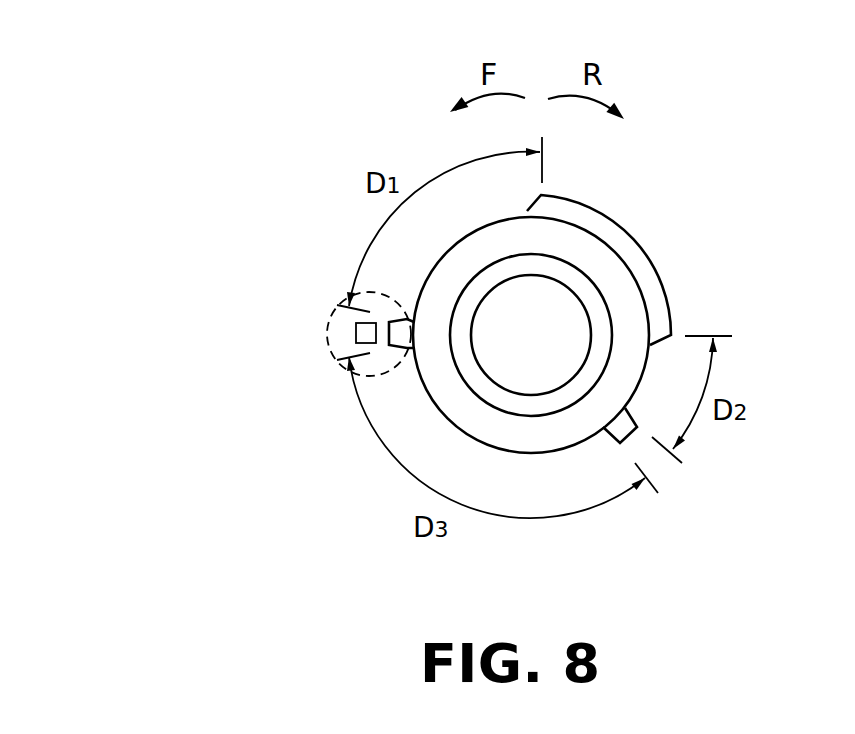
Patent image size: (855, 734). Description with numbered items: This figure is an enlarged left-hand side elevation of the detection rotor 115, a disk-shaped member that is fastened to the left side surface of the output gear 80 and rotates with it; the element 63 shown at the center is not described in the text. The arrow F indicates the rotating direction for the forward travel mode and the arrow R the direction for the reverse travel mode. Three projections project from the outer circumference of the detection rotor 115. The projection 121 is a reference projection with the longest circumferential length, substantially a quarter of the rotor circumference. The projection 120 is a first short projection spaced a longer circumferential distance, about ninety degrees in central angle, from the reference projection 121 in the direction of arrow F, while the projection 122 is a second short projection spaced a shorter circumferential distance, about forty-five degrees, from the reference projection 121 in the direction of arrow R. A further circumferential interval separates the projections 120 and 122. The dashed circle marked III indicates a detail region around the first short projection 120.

The reference projection 121 is at (582, 208).
The output gear 80 is at (568, 277).
The shaft 63 is at (568, 315).
The first short projection 120 is at (394, 350).
The second short projection 122 is at (627, 428).
The detection rotor 115 is at (539, 462).
The section indicator III is at (327, 333).